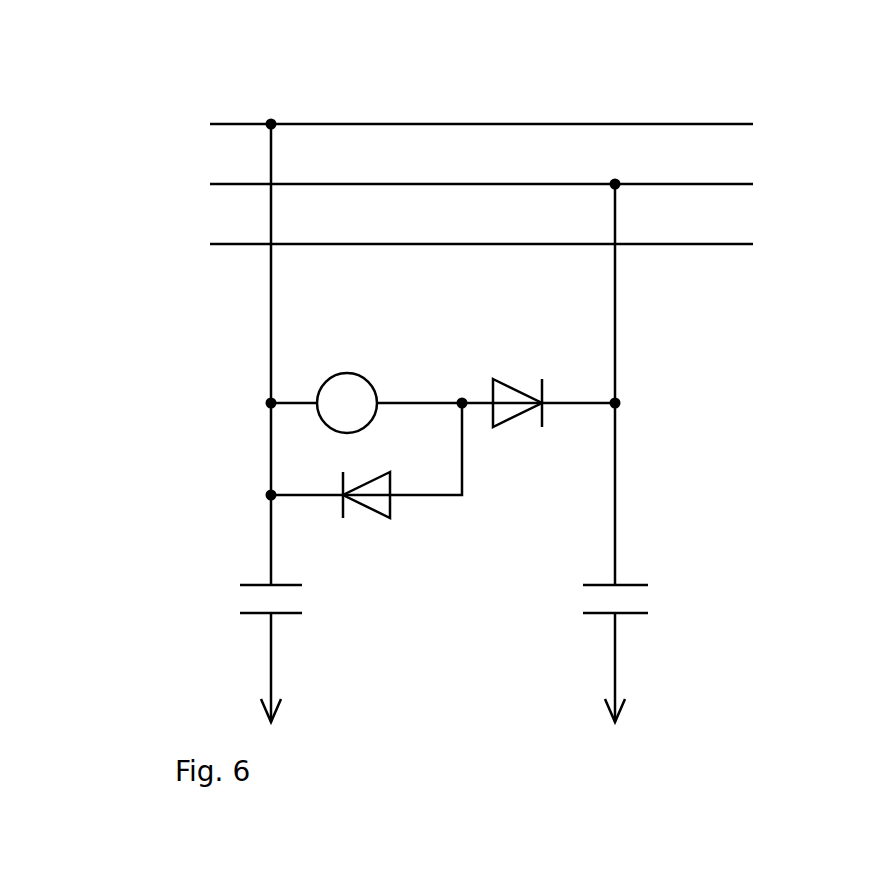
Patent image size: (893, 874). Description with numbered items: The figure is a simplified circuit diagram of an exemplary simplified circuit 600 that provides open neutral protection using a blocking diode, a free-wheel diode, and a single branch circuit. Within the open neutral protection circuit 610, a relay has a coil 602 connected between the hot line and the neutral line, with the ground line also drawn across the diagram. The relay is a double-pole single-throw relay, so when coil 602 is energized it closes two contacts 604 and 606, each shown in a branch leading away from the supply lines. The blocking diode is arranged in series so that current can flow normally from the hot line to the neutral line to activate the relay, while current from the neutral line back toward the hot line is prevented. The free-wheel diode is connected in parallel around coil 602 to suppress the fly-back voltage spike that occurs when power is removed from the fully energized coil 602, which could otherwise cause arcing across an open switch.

The simplified circuit 600 is at (128, 76).
The open neutral protection circuit 610 is at (196, 352).
The coil 602 is at (342, 374).
The contact 604 is at (285, 615).
The contact 606 is at (590, 615).